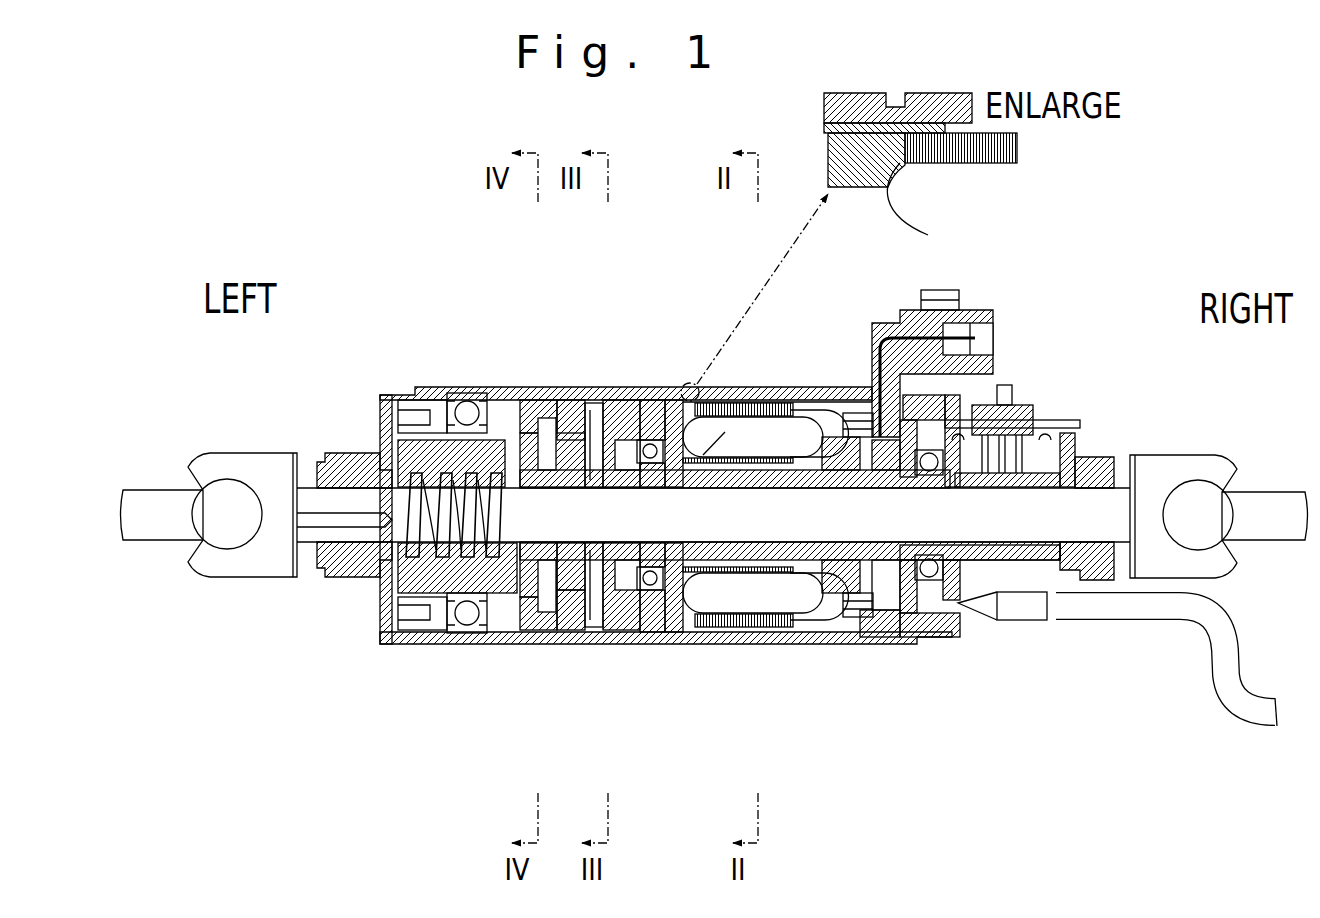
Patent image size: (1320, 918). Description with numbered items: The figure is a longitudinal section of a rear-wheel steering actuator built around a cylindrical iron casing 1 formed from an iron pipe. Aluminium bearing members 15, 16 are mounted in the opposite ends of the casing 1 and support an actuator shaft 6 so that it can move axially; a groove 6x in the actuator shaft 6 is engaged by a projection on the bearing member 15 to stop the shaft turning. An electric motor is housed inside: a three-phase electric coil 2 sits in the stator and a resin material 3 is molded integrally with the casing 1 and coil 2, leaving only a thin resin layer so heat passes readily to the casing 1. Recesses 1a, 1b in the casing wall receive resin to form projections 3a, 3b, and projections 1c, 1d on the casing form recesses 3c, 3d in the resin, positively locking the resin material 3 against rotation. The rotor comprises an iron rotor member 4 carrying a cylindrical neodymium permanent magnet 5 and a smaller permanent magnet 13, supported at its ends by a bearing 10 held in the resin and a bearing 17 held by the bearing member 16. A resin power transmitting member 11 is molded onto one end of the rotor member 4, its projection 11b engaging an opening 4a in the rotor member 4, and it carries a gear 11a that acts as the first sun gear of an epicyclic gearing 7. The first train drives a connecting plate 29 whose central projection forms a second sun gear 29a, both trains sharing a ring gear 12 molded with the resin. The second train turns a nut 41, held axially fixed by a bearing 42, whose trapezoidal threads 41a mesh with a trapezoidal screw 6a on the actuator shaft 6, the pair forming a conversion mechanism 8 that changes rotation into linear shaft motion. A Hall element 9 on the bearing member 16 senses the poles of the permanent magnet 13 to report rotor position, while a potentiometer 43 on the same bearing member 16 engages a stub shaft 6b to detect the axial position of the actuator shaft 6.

In FIG. 1, the casing 1 is at (827, 387).
In FIG. 1, the recess 1a is at (530, 390).
In FIG. 1, the recess 1b is at (530, 643).
In FIG. 11, the projection 1c is at (888, 132).
In FIG. 1, the projection 1d is at (697, 645).
In FIG. 1, the electric coil 2 is at (790, 430).
In FIG. 11, the electric coil 2 is at (921, 203).
In FIG. 1, the resin material 3 is at (652, 645).
In FIG. 1, the projection 3a is at (550, 390).
In FIG. 1, the projection 3b is at (542, 645).
In FIG. 11, the recess 3c is at (895, 143).
In FIG. 1, the recess 3d is at (672, 645).
In FIG. 1, the rotor member 4 is at (817, 645).
In FIG. 1, the opening 4a is at (735, 390).
In FIG. 1, the permanent magnet 5 is at (770, 390).
In FIG. 1, the actuator shaft 6 is at (1097, 457).
In FIG. 1, the trapezoidal screw 6a is at (383, 593).
In FIG. 1, the stub shaft 6b is at (1003, 565).
In FIG. 1, the groove 6x is at (300, 470).
In FIG. 1, the epicyclic gearing 7 is at (566, 645).
In FIG. 1, the conversion mechanism 8 is at (390, 640).
In FIG. 1, the Hall element 9 is at (945, 410).
In FIG. 1, the bearing 10 is at (640, 643).
In FIG. 1, the power transmitting member 11 is at (668, 390).
In FIG. 1, the gear 11a is at (447, 393).
In FIG. 1, the projection 11b is at (633, 390).
In FIG. 1, the ring gear 12 is at (585, 390).
In FIG. 1, the permanent magnet 13 is at (870, 645).
In FIG. 1, the bearing member 15 is at (327, 567).
In FIG. 1, the bearing member 16 is at (1093, 583).
In FIG. 1, the bearing 17 is at (940, 645).
In FIG. 1, the connecting plate 29 is at (583, 645).
In FIG. 1, the sun gear 29a is at (385, 420).
In FIG. 1, the nut 41 is at (427, 645).
In FIG. 1, the trapezoidal threads 41a is at (472, 640).
In FIG. 1, the bearing 42 is at (480, 390).
In FIG. 1, the potentiometer 43 is at (1035, 470).